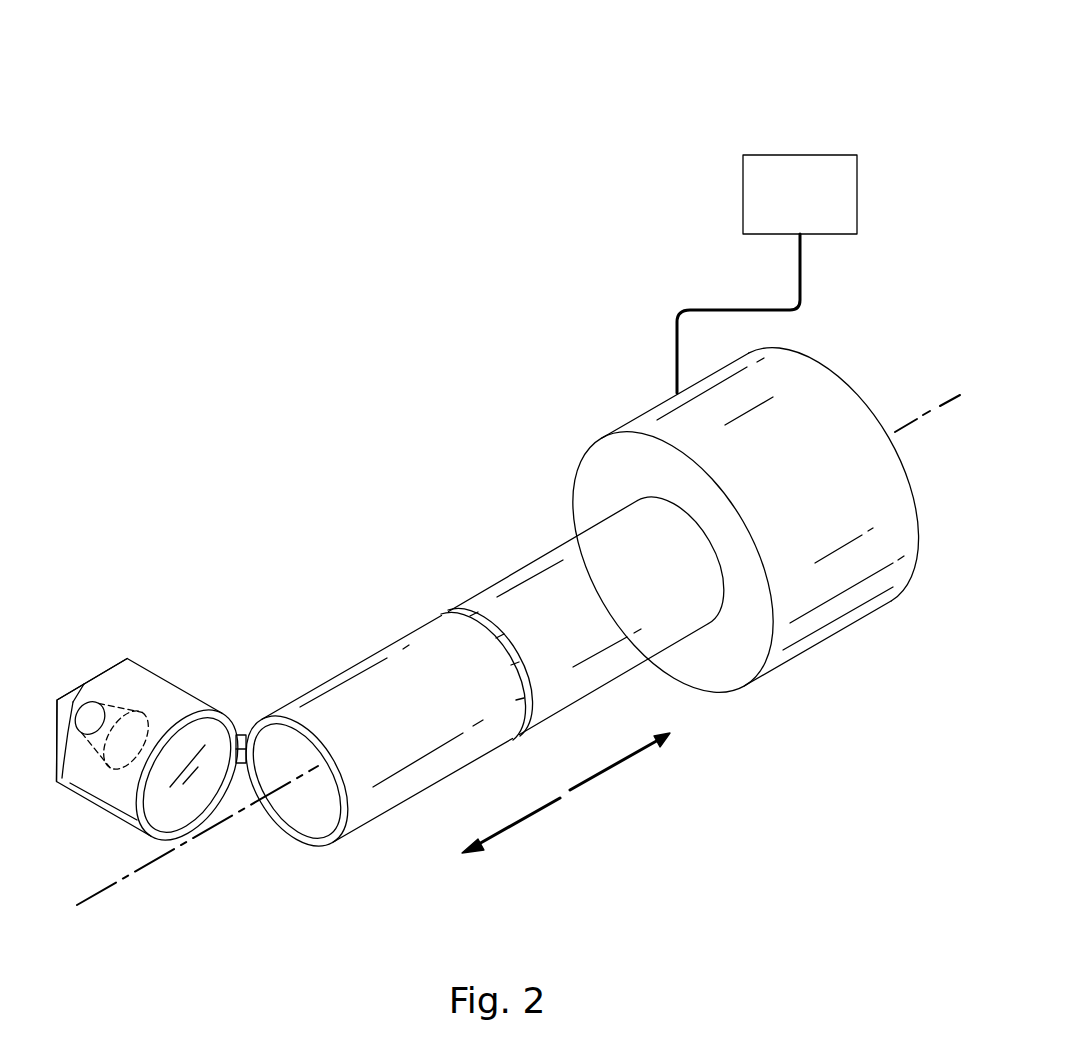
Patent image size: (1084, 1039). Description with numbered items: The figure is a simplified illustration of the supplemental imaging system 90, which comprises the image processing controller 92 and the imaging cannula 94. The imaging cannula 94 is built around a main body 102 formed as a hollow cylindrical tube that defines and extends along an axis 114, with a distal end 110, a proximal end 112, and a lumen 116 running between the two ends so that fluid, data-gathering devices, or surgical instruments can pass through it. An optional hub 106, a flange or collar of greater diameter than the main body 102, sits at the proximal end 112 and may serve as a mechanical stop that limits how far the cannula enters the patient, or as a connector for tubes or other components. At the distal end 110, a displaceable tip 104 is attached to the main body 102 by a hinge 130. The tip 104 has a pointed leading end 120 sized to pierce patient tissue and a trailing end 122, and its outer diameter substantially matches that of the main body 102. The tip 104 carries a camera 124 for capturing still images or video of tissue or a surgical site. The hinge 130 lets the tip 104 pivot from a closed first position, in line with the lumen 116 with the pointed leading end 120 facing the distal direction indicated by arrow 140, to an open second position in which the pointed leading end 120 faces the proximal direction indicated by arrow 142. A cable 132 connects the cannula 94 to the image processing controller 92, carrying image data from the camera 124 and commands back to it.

The supplemental imaging system 90 is at (147, 107).
The image processing controller 92 is at (810, 154).
The imaging cannula 94 is at (297, 434).
The main body 102 is at (388, 636).
The displaceable tip 104 is at (88, 810).
The hub 106 is at (820, 642).
The distal end 110 is at (320, 860).
The proximal end 112 is at (712, 512).
The axis 114 is at (106, 893).
The lumen 116 is at (294, 808).
The pointed leading end 120 is at (84, 684).
The trailing end 122 is at (183, 808).
The camera 124 is at (127, 706).
The hinge 130 is at (241, 731).
The cable 132 is at (737, 309).
The arrow indicating distal direction 140 is at (519, 823).
The arrow indicating proximal direction 142 is at (614, 772).